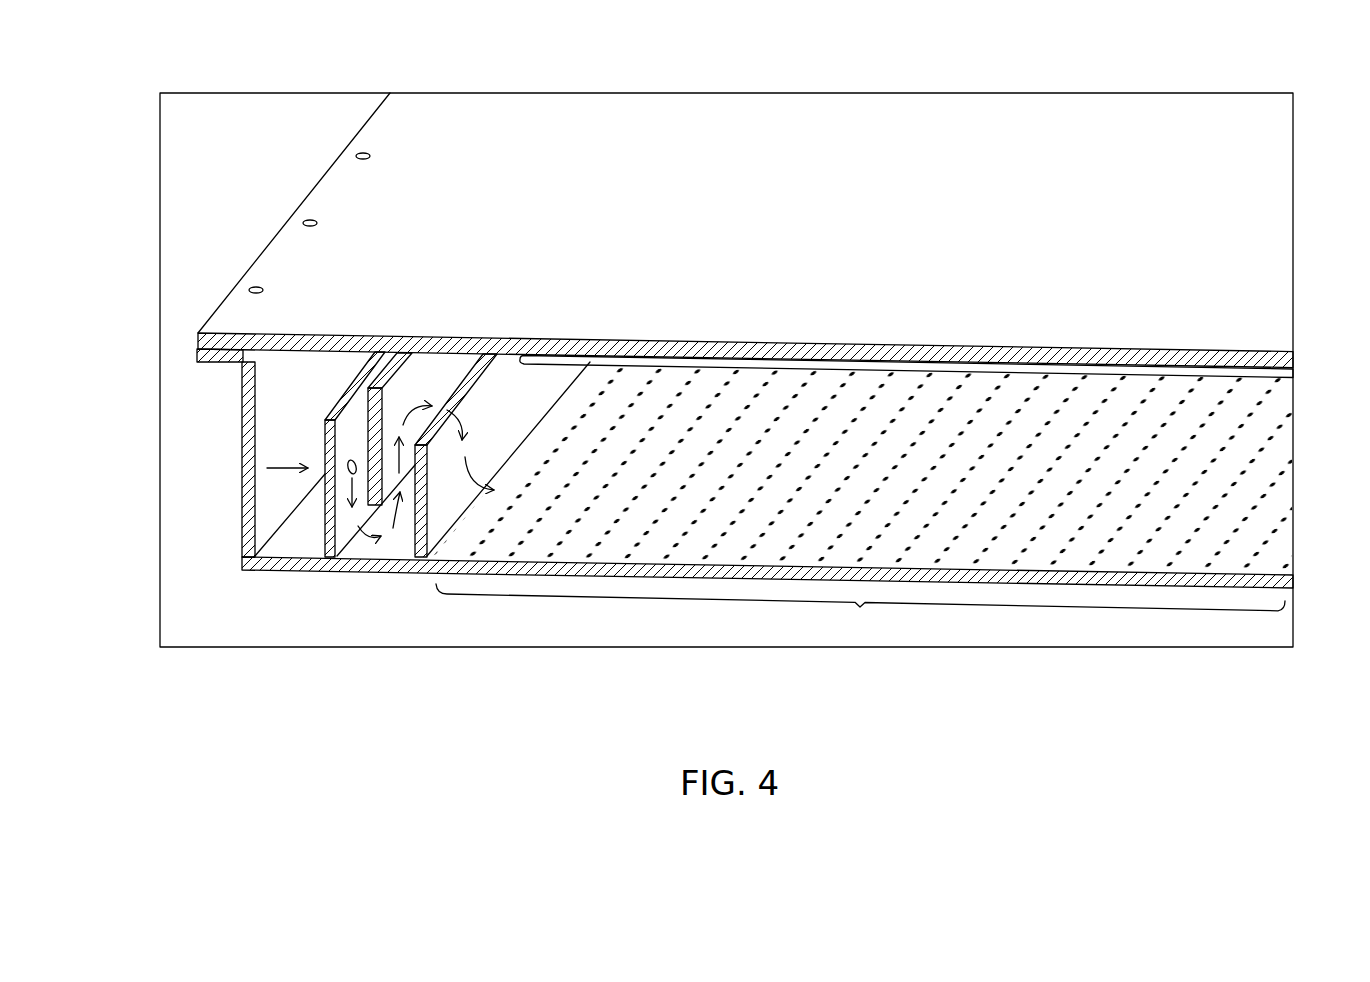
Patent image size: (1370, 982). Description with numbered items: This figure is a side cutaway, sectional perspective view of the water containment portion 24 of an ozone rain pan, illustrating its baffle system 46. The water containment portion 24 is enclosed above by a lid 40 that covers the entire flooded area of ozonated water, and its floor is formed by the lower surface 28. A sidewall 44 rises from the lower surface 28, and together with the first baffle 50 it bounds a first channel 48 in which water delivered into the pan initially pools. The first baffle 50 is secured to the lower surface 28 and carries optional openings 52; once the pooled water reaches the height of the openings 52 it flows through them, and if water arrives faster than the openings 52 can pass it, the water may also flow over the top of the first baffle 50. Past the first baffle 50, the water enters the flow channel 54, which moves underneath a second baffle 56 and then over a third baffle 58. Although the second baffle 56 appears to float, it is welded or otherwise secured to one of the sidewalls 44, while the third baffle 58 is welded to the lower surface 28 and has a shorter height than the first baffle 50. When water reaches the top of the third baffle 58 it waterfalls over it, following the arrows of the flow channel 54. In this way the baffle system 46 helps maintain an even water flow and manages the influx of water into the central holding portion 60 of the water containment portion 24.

The water containment portion 24 is at (1232, 503).
The lower surface 28 is at (441, 546).
The lid 40 is at (955, 244).
The sidewall 44 is at (242, 421).
The baffle system 46 is at (372, 575).
The first channel 48 is at (300, 427).
The first baffle 50 is at (328, 420).
The openings 52 is at (353, 461).
The flow channel 54 is at (345, 567).
The second baffle 56 is at (370, 386).
The third baffle 58 is at (417, 487).
The central holding portion 60 is at (860, 607).